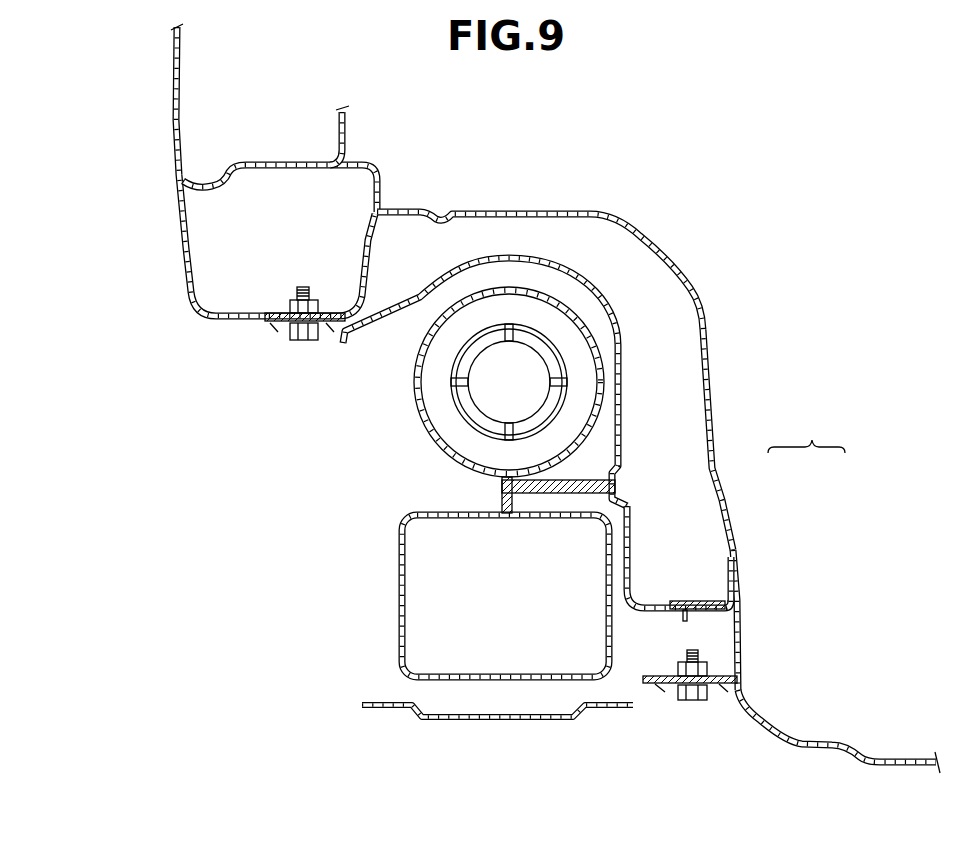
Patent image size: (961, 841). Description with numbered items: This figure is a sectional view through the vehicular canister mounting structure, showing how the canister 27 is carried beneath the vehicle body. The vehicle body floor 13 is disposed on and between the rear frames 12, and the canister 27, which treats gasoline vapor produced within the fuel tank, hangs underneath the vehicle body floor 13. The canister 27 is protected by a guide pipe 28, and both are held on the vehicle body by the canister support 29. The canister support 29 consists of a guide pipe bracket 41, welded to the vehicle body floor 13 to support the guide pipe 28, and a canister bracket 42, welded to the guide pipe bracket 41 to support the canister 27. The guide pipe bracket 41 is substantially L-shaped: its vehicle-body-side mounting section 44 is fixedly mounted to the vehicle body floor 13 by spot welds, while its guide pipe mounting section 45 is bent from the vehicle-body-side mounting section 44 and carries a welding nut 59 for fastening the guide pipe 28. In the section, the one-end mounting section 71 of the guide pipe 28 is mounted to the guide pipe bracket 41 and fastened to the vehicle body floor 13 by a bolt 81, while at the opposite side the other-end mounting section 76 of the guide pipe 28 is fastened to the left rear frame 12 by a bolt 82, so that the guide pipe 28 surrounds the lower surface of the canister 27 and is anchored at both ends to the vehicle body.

The rear frame 12 is at (178, 229).
The vehicle body floor 13 is at (621, 221).
The vehicular canister 27 is at (516, 286).
The guide pipe 28 is at (734, 687).
The canister support 29 is at (806, 434).
The guide pipe bracket 41 is at (742, 566).
The canister bracket 42 is at (734, 536).
The vehicle-body-side mounting section 44 is at (738, 622).
The guide pipe mounting section 45 is at (659, 675).
The welding nut 59 is at (700, 660).
The one-end mounting section 71 is at (656, 691).
The other-end mounting section 76 is at (267, 330).
The bolt 81 is at (678, 701).
The bolt 82 is at (288, 338).